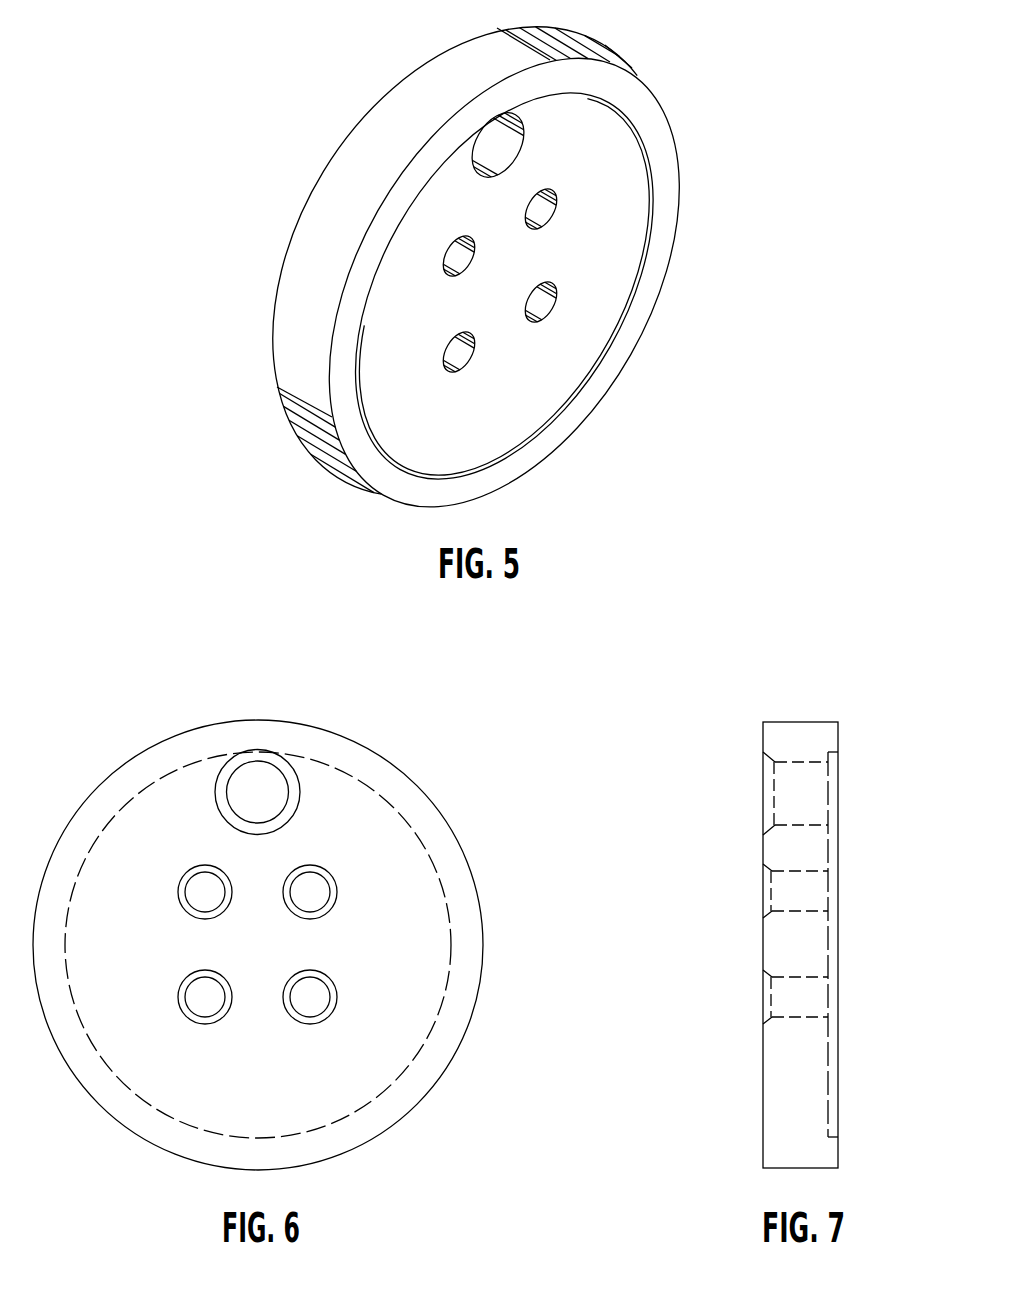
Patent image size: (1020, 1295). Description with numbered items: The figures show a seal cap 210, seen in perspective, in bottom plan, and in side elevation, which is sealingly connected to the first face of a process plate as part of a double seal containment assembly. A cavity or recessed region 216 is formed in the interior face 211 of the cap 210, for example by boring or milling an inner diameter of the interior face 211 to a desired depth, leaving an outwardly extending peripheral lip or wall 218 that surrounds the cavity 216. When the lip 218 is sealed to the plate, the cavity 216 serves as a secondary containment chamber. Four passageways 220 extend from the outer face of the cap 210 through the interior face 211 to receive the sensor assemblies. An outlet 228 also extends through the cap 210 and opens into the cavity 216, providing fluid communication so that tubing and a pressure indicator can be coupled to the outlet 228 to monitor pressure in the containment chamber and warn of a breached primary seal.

In FIG. 5, the seal cap 210 is at (470, 57).
In FIG. 6, the seal cap 210 is at (118, 770).
In FIG. 5, the interior face 211 is at (477, 442).
In FIG. 5, the cavity or recessed region 216 is at (537, 390).
In FIG. 7, the cavity or recessed region 216 is at (832, 1073).
In FIG. 5, the lip or wall 218 is at (670, 167).
In FIG. 7, the lip or wall 218 is at (840, 738).
In FIG. 5, the passageways 220 is at (527, 223).
In FIG. 6, the passageways 220 is at (308, 913).
In FIG. 7, the passageways 220 is at (798, 912).
In FIG. 5, the outlet 228 is at (497, 145).
In FIG. 6, the outlet 228 is at (287, 805).
In FIG. 7, the outlet 228 is at (802, 825).